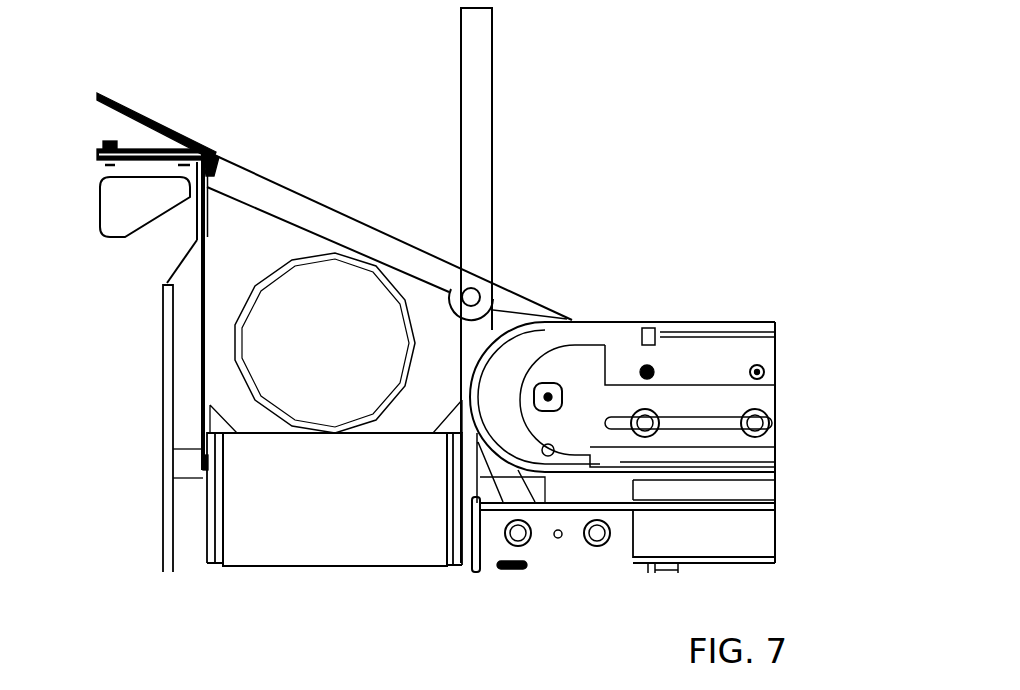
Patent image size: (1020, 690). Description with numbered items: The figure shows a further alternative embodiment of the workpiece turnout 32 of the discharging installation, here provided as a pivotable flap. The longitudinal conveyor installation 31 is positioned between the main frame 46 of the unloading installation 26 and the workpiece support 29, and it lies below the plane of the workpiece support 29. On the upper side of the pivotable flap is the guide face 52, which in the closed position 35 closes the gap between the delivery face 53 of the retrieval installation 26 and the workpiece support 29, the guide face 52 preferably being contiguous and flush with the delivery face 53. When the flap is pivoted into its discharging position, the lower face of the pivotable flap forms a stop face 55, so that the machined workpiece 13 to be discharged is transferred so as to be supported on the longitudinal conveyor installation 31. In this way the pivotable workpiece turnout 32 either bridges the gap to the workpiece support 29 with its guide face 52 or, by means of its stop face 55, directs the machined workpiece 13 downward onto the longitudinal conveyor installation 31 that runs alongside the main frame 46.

The machined workpiece 13 is at (256, 292).
The unloading installation 26 is at (106, 326).
The workpiece support 29 is at (739, 300).
The longitudinal conveyor installation 31 is at (300, 576).
The workpiece turnout 32 is at (517, 44).
The closed position 35 is at (364, 68).
The main frame 46 is at (165, 450).
The guide face 52 is at (495, 124).
The delivery face 53 is at (142, 114).
The stop face 55 is at (459, 105).